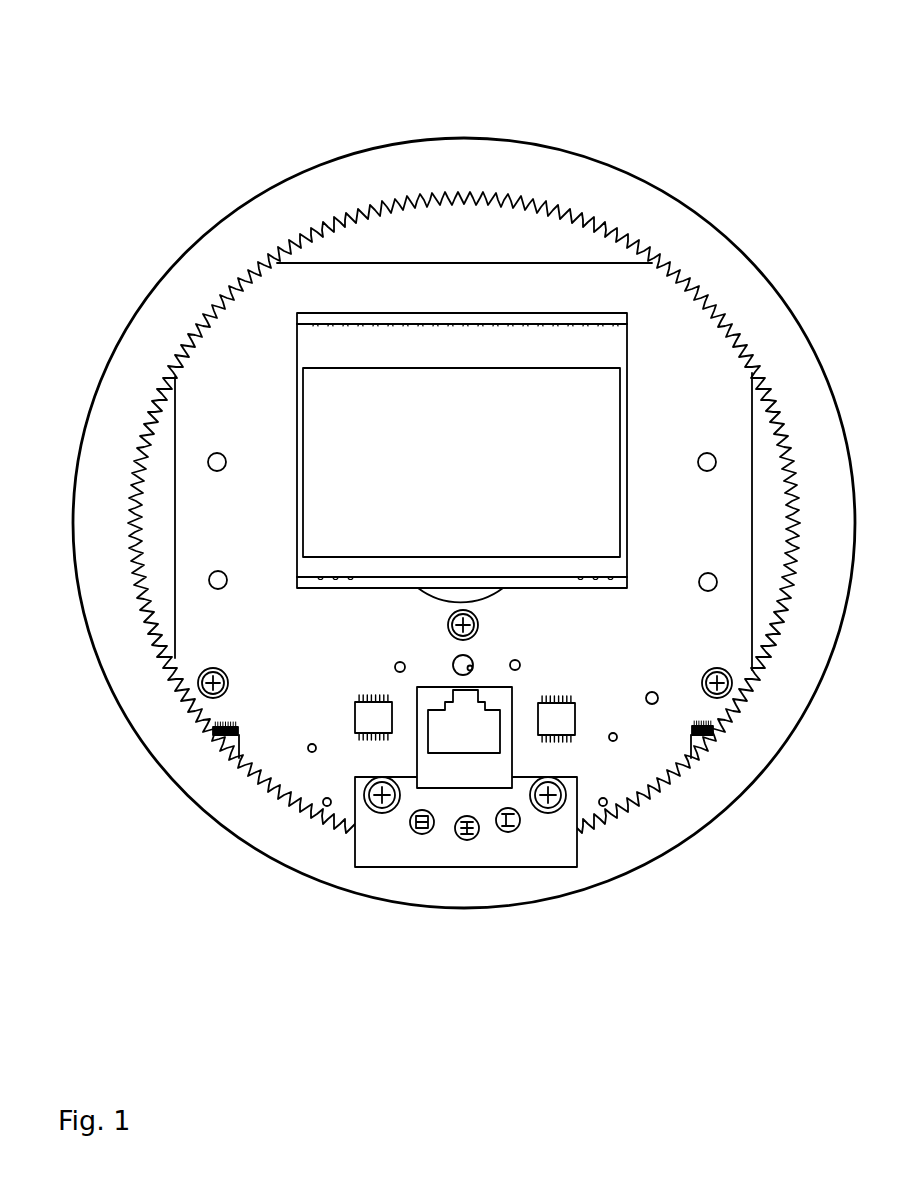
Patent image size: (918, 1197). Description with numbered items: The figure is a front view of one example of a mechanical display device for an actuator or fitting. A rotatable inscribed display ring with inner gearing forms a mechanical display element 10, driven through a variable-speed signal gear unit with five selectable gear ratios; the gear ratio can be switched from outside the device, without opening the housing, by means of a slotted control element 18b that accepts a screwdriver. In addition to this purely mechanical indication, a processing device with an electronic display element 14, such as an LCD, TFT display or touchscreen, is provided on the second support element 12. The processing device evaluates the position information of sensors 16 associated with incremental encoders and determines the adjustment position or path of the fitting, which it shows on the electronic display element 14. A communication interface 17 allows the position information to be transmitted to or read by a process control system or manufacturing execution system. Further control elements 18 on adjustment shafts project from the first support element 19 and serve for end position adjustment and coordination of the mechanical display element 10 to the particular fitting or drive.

The mechanical display element 10 is at (125, 388).
The second support element 12 is at (265, 597).
The electronic display element 14 is at (475, 450).
The sensors 16 is at (713, 733).
The interface 17 is at (497, 718).
The control element 18 is at (423, 823).
The control element 18b is at (467, 830).
The first support element 19 is at (560, 837).